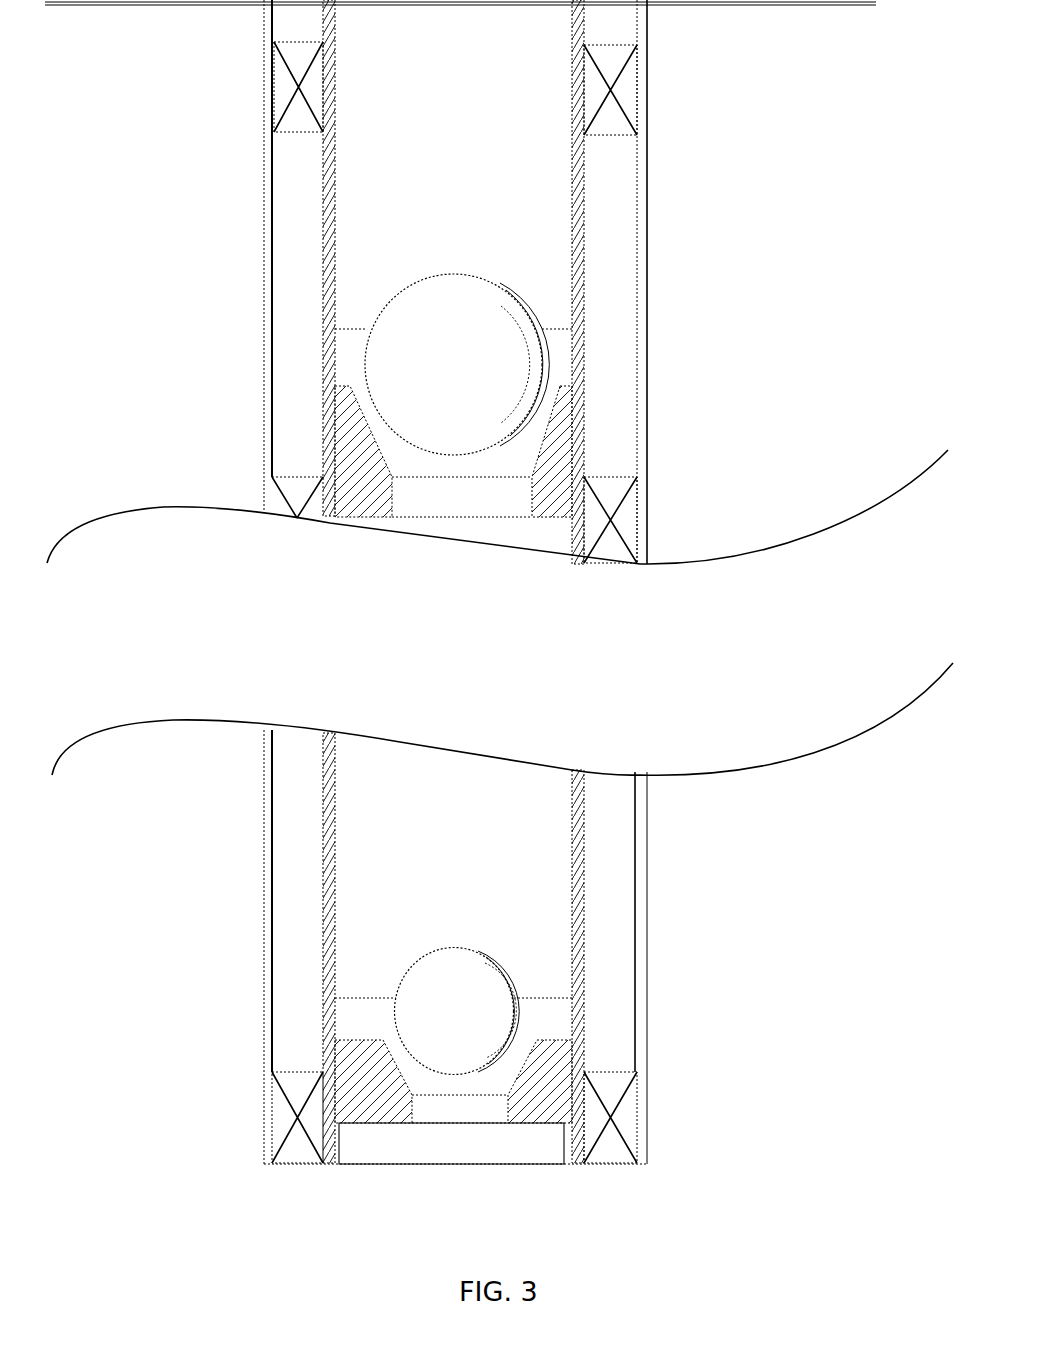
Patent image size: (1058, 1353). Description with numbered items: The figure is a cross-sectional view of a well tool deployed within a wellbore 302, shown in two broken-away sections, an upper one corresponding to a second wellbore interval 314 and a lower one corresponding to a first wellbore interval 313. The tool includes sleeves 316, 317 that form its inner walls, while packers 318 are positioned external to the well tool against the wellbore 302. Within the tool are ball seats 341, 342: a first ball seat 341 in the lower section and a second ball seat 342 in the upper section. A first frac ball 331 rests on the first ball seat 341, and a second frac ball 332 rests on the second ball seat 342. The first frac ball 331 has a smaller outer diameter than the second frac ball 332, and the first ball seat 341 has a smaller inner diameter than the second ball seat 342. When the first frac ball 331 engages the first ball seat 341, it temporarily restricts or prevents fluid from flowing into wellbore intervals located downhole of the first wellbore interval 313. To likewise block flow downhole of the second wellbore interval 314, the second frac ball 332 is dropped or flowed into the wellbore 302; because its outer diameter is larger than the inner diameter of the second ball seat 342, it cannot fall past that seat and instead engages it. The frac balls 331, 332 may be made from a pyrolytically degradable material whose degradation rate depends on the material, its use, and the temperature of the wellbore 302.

The wellbore 302 is at (647, 183).
The first wellbore interval 313 is at (437, 947).
The second wellbore interval 314 is at (469, 581).
The sleeve 316 is at (331, 294).
The sleeve 317 is at (583, 338).
The packer 318 is at (310, 58).
The first frac ball 331 is at (408, 1013).
The second frac ball 332 is at (422, 423).
The first ball seat 341 is at (517, 1052).
The second ball seat 342 is at (535, 443).